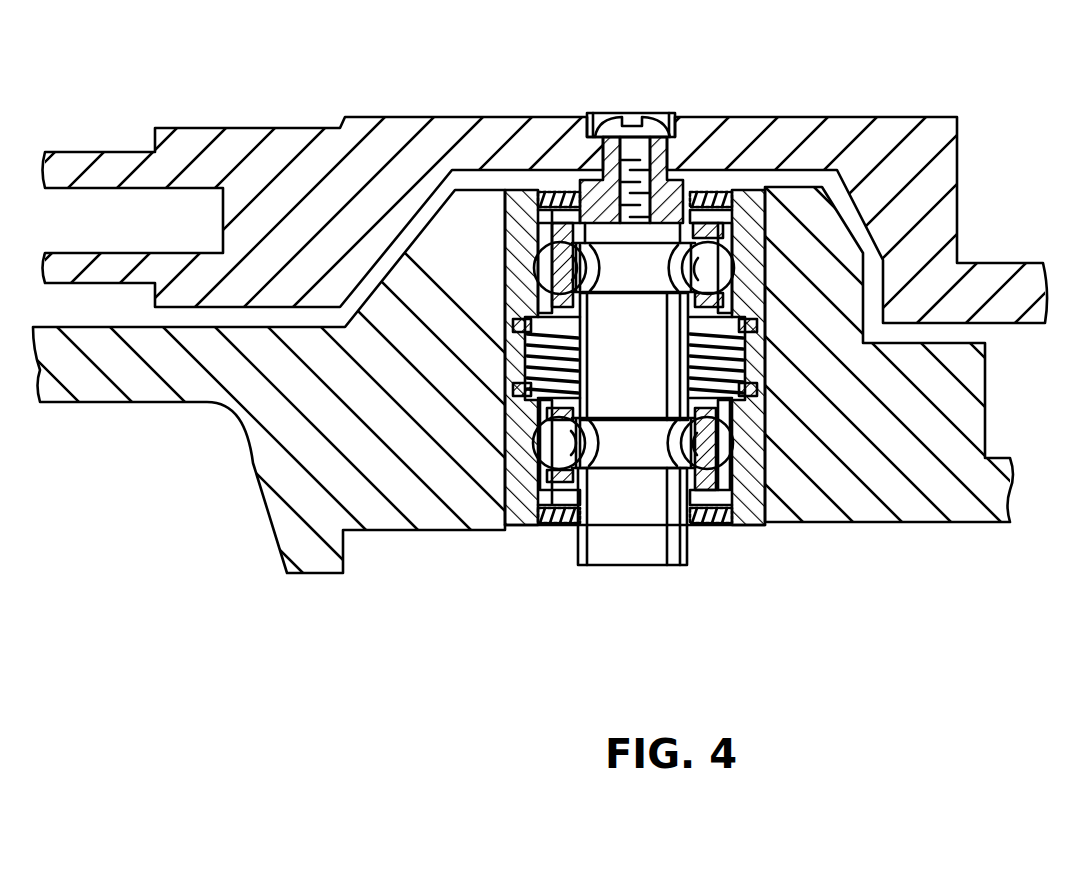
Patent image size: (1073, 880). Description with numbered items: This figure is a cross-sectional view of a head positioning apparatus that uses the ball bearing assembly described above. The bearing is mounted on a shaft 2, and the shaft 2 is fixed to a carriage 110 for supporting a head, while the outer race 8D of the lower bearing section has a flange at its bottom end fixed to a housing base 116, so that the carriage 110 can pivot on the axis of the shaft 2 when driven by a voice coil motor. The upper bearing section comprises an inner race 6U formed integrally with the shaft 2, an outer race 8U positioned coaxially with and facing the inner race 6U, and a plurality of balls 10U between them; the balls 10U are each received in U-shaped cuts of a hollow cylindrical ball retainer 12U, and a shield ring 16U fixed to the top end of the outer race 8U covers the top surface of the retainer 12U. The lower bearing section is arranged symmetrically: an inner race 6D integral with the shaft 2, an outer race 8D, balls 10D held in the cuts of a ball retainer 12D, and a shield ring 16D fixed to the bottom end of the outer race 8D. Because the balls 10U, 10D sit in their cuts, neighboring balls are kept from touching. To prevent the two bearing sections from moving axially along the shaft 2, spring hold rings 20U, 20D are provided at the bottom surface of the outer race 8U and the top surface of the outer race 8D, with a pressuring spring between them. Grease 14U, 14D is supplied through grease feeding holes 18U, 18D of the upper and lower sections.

The shaft 2 is at (642, 543).
The inner race 6U is at (651, 271).
The inner race 6D is at (627, 450).
The outer race 8U is at (760, 290).
The outer race 8D is at (543, 450).
The balls 10U is at (712, 265).
The balls 10D is at (515, 420).
The ball retainer 12U is at (750, 195).
The ball retainer 12D is at (543, 525).
The grease 14U is at (748, 210).
The grease 14D is at (540, 493).
The shield ring 16U is at (730, 192).
The shield ring 16D is at (713, 523).
The grease feeding holes 18U is at (742, 198).
The grease feeding holes 18D is at (557, 497).
The spring hold ring 20U is at (770, 330).
The spring hold ring 20D is at (766, 388).
The carriage 110 is at (265, 140).
The housing base 116 is at (157, 388).